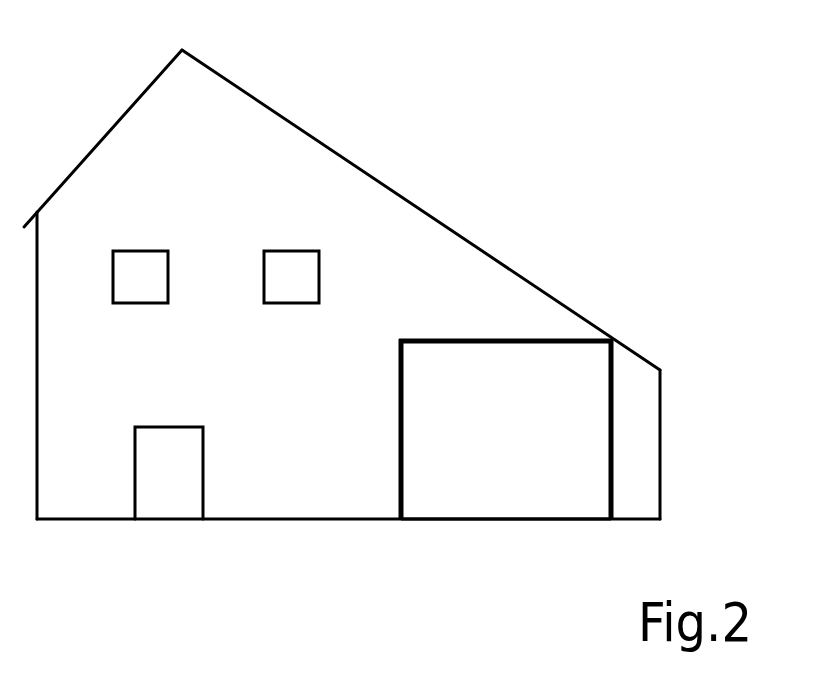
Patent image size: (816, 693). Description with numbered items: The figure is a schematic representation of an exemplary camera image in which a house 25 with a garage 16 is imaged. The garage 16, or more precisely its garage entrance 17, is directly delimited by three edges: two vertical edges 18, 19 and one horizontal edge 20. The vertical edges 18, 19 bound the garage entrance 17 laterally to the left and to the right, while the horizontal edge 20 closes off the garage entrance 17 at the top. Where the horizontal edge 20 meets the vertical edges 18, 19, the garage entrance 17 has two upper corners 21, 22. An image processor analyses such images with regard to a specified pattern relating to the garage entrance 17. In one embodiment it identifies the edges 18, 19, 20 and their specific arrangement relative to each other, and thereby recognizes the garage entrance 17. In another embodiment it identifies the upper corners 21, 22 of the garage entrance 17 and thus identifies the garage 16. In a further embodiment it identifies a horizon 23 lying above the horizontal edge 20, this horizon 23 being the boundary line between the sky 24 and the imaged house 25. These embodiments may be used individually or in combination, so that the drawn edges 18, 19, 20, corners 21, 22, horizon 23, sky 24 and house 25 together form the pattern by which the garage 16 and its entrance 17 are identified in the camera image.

The garage 16 is at (600, 369).
The garage entrance 17 is at (519, 451).
The vertical edge 18 is at (401, 470).
The vertical edge 19 is at (614, 469).
The horizontal edge 20 is at (458, 339).
The corner 21 is at (396, 325).
The corner 22 is at (617, 324).
The horizon 23 is at (389, 186).
The sky 24 is at (522, 120).
The house 25 is at (254, 115).